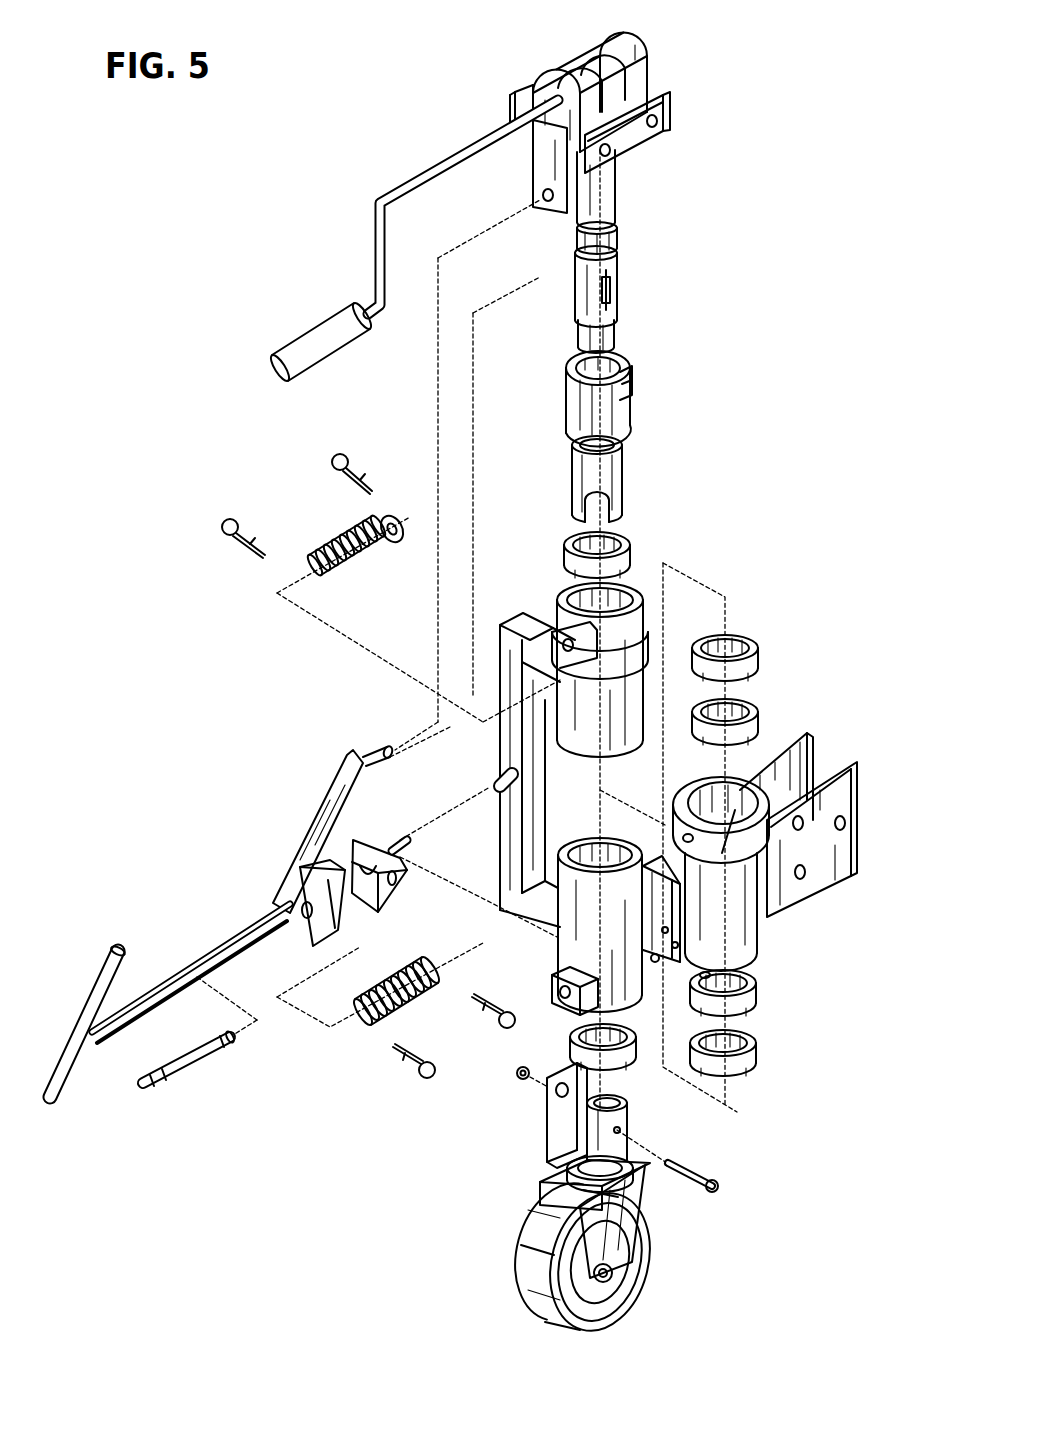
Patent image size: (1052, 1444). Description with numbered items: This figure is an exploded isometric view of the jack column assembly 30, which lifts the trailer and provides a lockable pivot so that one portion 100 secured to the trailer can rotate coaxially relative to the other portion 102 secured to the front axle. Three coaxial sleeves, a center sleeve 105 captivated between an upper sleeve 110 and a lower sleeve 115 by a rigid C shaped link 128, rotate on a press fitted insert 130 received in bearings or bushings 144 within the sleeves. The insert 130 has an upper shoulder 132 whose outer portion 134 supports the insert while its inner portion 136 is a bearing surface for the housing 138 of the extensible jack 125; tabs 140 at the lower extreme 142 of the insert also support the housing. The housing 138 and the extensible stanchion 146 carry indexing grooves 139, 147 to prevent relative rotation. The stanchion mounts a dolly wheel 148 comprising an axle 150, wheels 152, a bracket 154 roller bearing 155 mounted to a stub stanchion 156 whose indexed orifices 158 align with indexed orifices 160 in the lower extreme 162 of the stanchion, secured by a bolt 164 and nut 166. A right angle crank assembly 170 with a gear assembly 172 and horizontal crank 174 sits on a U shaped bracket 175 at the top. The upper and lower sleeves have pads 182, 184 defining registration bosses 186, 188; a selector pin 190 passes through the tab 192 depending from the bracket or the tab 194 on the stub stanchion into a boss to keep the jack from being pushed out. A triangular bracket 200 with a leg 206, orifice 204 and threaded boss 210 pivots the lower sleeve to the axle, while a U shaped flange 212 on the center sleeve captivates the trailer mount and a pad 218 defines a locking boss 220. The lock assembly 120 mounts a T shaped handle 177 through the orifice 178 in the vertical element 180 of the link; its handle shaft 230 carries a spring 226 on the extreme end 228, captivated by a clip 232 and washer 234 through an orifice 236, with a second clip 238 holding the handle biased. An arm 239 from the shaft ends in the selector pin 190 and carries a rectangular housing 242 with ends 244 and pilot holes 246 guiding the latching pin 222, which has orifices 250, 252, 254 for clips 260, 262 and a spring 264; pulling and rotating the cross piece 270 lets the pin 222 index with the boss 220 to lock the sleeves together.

The jack column assembly 30 is at (270, 188).
The portion 100 is at (782, 808).
The portion 102 is at (387, 607).
The center sleeve 105 is at (780, 808).
The upper sleeve 110 is at (579, 770).
The lower sleeve 115 is at (761, 896).
The lock assembly 120 is at (282, 771).
The extensible jack 125 is at (660, 190).
The C shaped link 128 is at (549, 737).
The insert 130 is at (563, 402).
The upper shoulder 132 is at (627, 380).
The outer portion 134 is at (627, 386).
The inner portion 136 is at (671, 398).
The housing 138 is at (620, 182).
The indexing groove 139 is at (620, 295).
The tabs 140 is at (605, 498).
The lower extreme 142 is at (632, 479).
The bearings or bushings 144 is at (640, 560).
The extensible stanchion 146 is at (620, 248).
The indexing groove 147 is at (573, 347).
The dolly wheel 148 is at (623, 1202).
The axle 150 is at (590, 1257).
The wheels 152 is at (514, 1252).
The bracket 154 is at (612, 1245).
The roller bearing 155 is at (632, 1180).
The stub stanchion 156 is at (645, 1170).
The indexed orifices 158 is at (620, 1128).
The indexed orifices 160 is at (620, 317).
The lower extreme 162 is at (568, 339).
The bolt 164 is at (716, 1180).
The nut 166 is at (524, 1080).
The right angle crank assembly 170 is at (586, 109).
The gear assembly 172 is at (657, 50).
The crank 174 is at (423, 180).
The U shaped bracket 175 is at (665, 112).
The handle 177 is at (228, 907).
The orifice 178 is at (500, 778).
The vertical element 180 is at (559, 935).
The pad 182 is at (593, 658).
The pad 184 is at (580, 1000).
The registration boss 186 is at (563, 625).
The registration boss 188 is at (556, 990).
The selector pin 190 is at (382, 748).
The tab 192 is at (530, 180).
The tab 194 is at (557, 1145).
The triangular bracket 200 is at (690, 897).
The orifice 204 is at (683, 960).
The leg 206 is at (688, 940).
The threaded boss 210 is at (710, 976).
The U shaped flange 212 is at (816, 794).
The pad 218 is at (787, 735).
The locking boss 220 is at (735, 810).
The pin 222 is at (239, 1091).
The spring 226 is at (338, 545).
The extreme end 228 is at (367, 858).
The handle shaft 230 is at (388, 840).
The clip 232 is at (342, 456).
The washer 234 is at (383, 518).
The orifice 236 is at (405, 852).
The second clip 238 is at (230, 520).
The arm 239 is at (327, 791).
The rectangular housing 242 is at (322, 841).
The ends 244 is at (370, 875).
The pilot holes 246 is at (372, 862).
The orifice 250 is at (224, 1043).
The orifice 252 is at (168, 1076).
The orifice 254 is at (150, 1090).
The clip 260 is at (504, 1030).
The second clip 262 is at (414, 1070).
The spring 264 is at (418, 1005).
The cross piece 270 is at (103, 950).